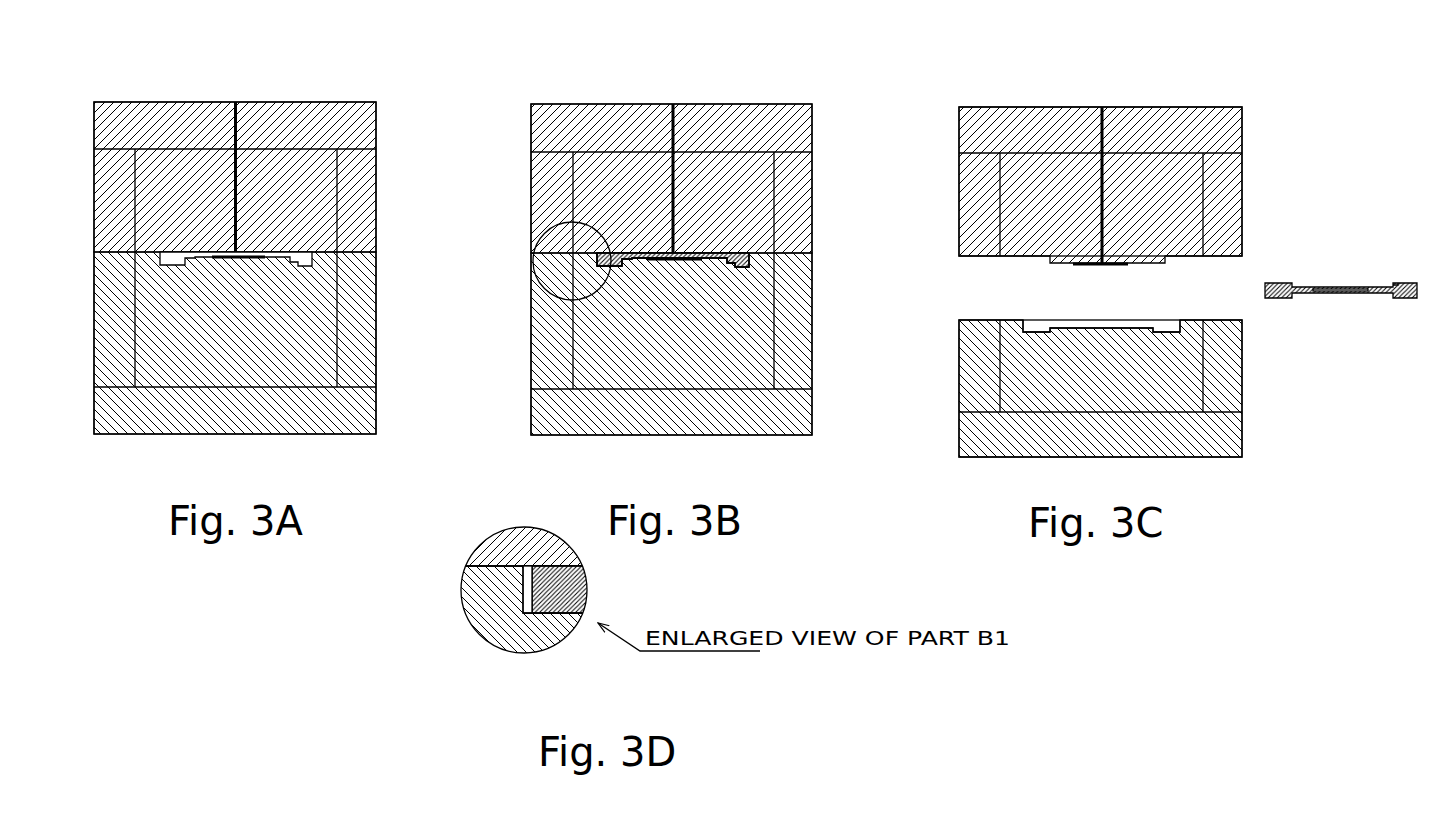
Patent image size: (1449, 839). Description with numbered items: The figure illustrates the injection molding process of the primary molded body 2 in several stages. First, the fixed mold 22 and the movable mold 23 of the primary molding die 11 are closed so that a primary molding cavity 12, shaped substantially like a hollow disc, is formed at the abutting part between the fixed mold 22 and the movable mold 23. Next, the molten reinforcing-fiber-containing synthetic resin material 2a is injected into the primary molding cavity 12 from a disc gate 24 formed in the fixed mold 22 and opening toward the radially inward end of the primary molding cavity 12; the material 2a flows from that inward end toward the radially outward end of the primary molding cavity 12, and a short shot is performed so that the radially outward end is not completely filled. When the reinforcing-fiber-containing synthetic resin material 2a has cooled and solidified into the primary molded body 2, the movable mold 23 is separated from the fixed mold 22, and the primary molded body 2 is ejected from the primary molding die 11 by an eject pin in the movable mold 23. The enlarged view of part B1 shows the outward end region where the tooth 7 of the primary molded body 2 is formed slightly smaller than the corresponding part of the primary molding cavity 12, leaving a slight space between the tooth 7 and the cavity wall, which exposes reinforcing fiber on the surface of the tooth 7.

In FIG. 3A, the primary molding die 11 is at (338, 94).
In FIG. 3B, the primary molding die 11 is at (777, 96).
In FIG. 3C, the primary molding die 11 is at (1204, 100).
In FIG. 3A, the fixed mold 22 is at (378, 219).
In FIG. 3B, the fixed mold 22 is at (816, 221).
In FIG. 3C, the fixed mold 22 is at (1245, 223).
In FIG. 3D, the fixed mold 22 is at (497, 545).
In FIG. 3A, the movable mold 23 is at (378, 333).
In FIG. 3B, the movable mold 23 is at (816, 335).
In FIG. 3C, the movable mold 23 is at (1245, 391).
In FIG. 3D, the movable mold 23 is at (512, 643).
In FIG. 3A, the primary molding cavity 12 is at (163, 260).
In FIG. 3B, the primary molding cavity 12 is at (594, 261).
In FIG. 3C, the primary molding cavity 12 is at (1163, 327).
In FIG. 3D, the primary molding cavity 12 is at (521, 606).
In FIG. 3A, the disc gate 24 is at (234, 262).
In FIG. 3B, the disc gate 24 is at (692, 263).
In FIG. 3C, the primary molded body 2 is at (1306, 289).
In FIG. 3B, the molten reinforcing-fiber-containing synthetic resin material 2a is at (597, 256).
In FIG. 3D, the molten reinforcing-fiber-containing synthetic resin material 2a is at (567, 598).
In FIG. 3D, the tooth 7 is at (521, 584).
In FIG. 3B, the enlarged part B1 is at (578, 300).